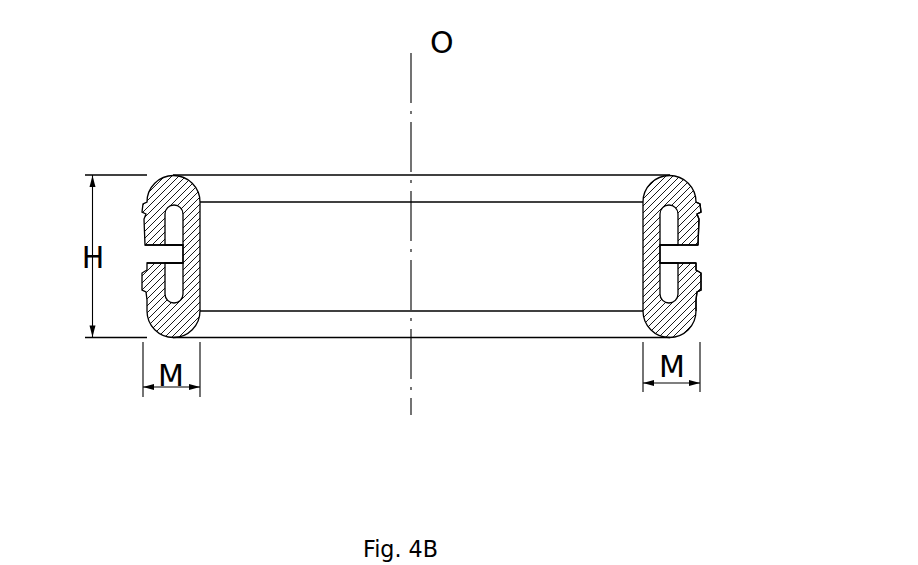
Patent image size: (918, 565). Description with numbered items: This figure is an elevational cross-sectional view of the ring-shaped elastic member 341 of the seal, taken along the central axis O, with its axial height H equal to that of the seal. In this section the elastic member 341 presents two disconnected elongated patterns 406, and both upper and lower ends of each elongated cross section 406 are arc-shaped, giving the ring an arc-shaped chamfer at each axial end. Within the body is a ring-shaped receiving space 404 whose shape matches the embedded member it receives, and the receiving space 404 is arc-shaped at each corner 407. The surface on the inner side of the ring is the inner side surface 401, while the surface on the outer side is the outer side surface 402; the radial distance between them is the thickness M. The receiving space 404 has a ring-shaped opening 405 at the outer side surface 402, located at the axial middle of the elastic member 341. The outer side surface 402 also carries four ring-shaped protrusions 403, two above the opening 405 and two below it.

The elastic member 341 is at (192, 131).
The inner side surface 401 is at (622, 242).
The outer side surface 402 is at (712, 192).
The protrusion 403 is at (698, 297).
The receiving space 404 is at (668, 268).
The opening 405 is at (150, 253).
The elongated pattern 406 is at (186, 250).
The corner 407 is at (199, 296).